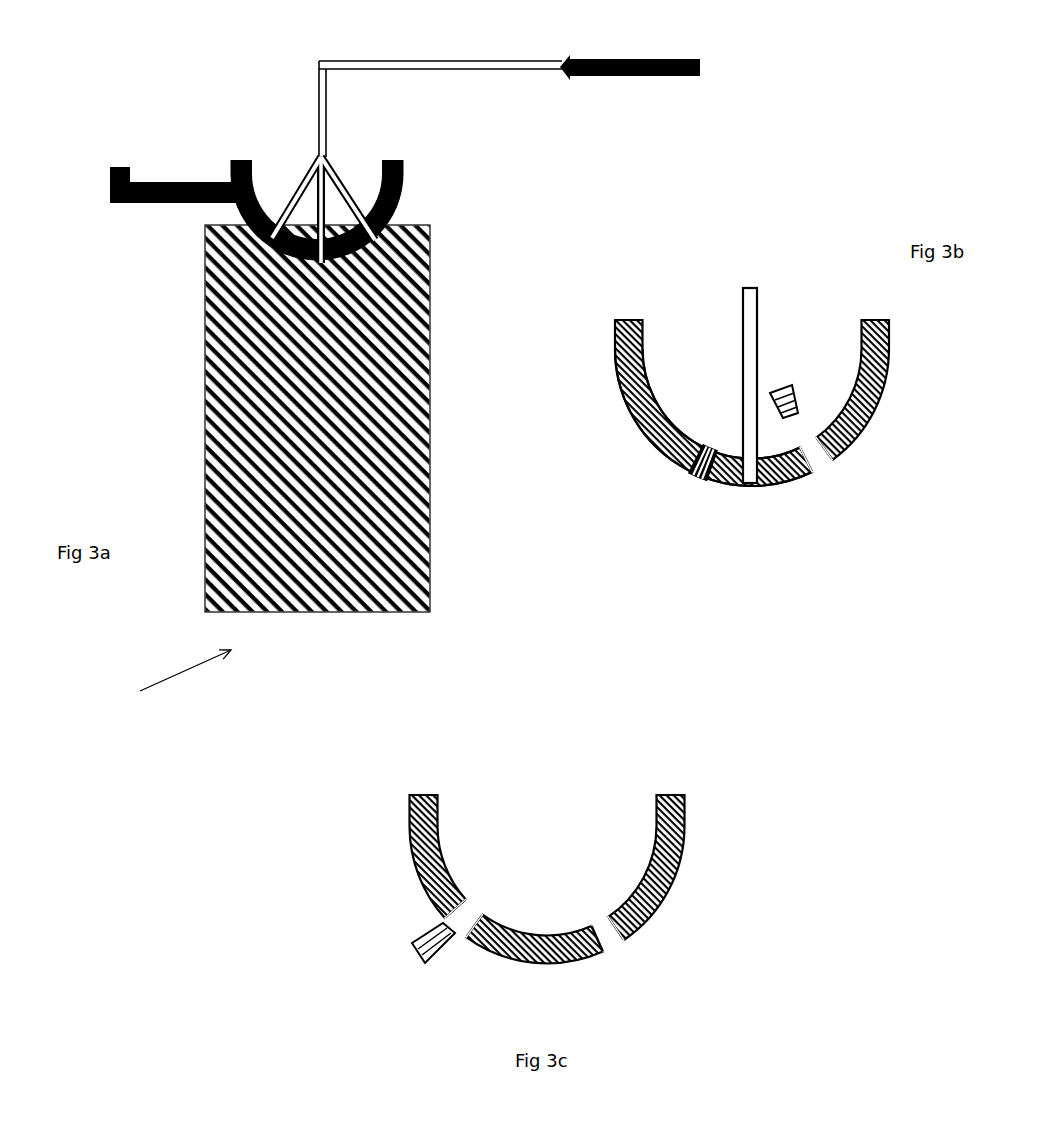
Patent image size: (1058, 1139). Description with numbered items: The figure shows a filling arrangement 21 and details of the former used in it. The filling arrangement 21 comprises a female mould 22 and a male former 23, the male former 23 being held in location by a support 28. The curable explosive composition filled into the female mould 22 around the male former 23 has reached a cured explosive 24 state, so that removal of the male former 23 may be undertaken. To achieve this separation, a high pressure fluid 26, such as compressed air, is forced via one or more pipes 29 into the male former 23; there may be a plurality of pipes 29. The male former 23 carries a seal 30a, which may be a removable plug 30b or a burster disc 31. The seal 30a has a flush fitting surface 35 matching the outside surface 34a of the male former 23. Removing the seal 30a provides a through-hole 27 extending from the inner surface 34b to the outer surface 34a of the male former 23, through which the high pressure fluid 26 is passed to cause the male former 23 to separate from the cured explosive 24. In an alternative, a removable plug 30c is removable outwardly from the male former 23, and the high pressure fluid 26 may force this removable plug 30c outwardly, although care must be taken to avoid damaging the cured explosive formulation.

In FIG. 3A, the filling arrangement 21 is at (161, 682).
In FIG. 3A, the female mould 22 is at (202, 456).
In FIG. 3A, the male former 23 is at (403, 177).
In FIG. 3B, the male former 23 is at (853, 433).
In FIG. 3C, the male former 23 is at (683, 838).
In FIG. 3A, the cured explosive 24 is at (389, 523).
In FIG. 3A, the high pressure fluid 26 is at (703, 65).
In FIG. 3B, the through-hole 27 is at (817, 457).
In FIG. 3C, the through-hole 27 is at (480, 908).
In FIG. 3A, the support 28 is at (178, 182).
In FIG. 3A, the pipe 29 is at (362, 217).
In FIG. 3B, the pipe 29 is at (750, 328).
In FIG. 3B, the seal 30a is at (792, 385).
In FIG. 3B, the removable plug 30b is at (702, 468).
In FIG. 3C, the alternative removable plug 30c is at (412, 950).
In FIG. 3C, the burster disc 31 is at (618, 952).
In FIG. 3B, the outer surface 34a is at (617, 345).
In FIG. 3B, the inner surface 34b is at (647, 358).
In FIG. 3B, the flush fitting surface 35 is at (692, 470).